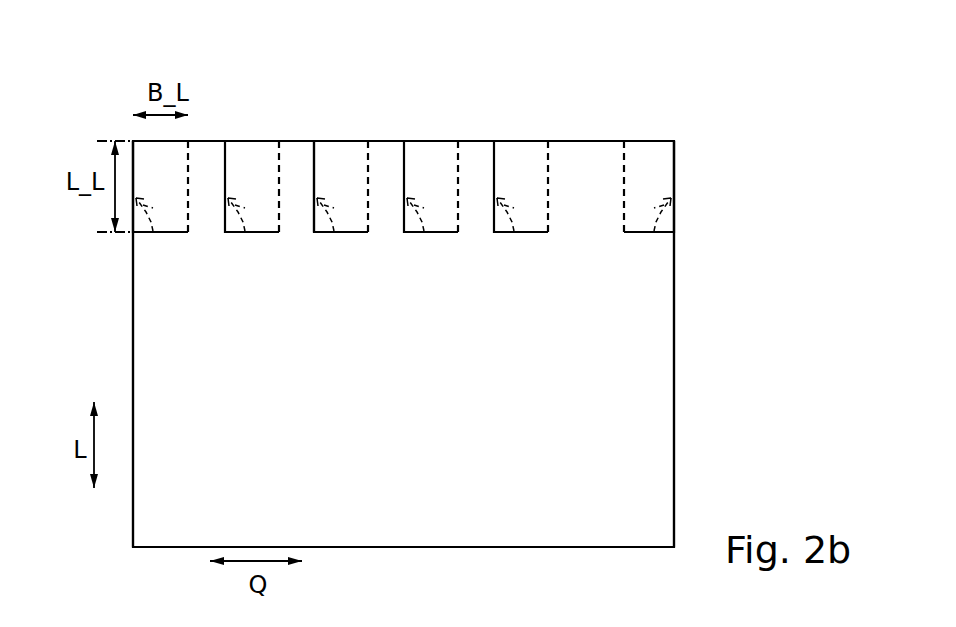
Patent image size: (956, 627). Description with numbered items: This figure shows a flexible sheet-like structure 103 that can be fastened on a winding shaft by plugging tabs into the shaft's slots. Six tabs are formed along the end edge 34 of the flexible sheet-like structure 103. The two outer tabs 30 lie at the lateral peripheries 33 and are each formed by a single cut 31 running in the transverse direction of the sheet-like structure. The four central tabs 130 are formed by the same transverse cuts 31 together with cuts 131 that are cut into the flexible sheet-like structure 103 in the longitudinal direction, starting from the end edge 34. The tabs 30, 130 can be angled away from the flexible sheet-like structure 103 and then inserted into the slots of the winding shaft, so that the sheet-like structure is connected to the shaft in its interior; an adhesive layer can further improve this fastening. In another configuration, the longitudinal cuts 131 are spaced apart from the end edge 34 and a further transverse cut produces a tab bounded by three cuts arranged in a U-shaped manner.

The flexible sheet-like structure 103 is at (705, 355).
The outer tab 30 is at (175, 189).
The cut in the transverse direction 31 is at (170, 233).
The lateral periphery 33 is at (133, 352).
The end edge 34 is at (241, 141).
The central tab 130 is at (348, 162).
The cut in the longitudinal direction 131 is at (314, 170).